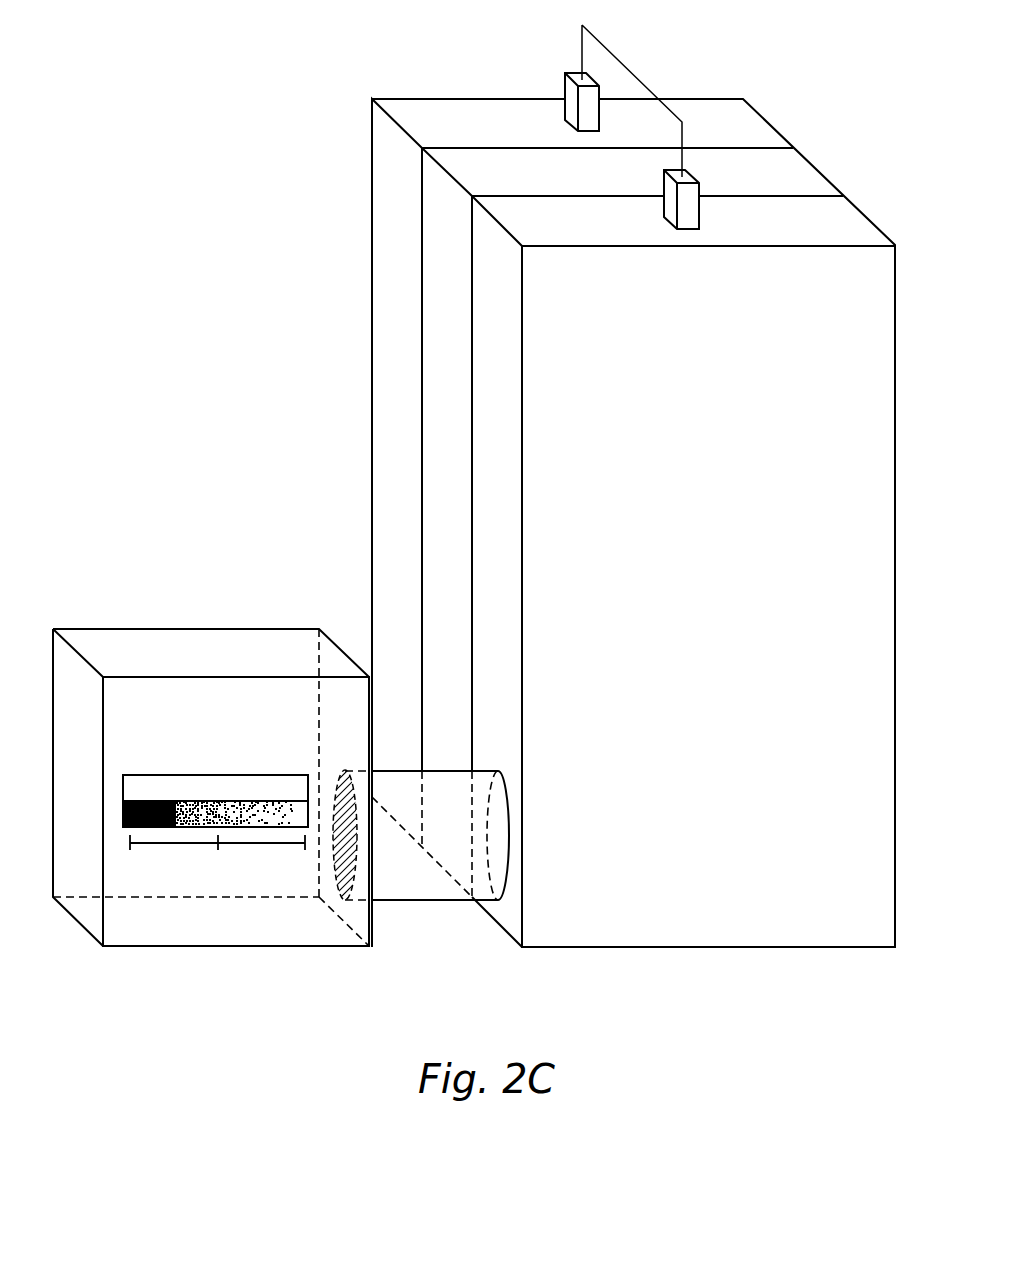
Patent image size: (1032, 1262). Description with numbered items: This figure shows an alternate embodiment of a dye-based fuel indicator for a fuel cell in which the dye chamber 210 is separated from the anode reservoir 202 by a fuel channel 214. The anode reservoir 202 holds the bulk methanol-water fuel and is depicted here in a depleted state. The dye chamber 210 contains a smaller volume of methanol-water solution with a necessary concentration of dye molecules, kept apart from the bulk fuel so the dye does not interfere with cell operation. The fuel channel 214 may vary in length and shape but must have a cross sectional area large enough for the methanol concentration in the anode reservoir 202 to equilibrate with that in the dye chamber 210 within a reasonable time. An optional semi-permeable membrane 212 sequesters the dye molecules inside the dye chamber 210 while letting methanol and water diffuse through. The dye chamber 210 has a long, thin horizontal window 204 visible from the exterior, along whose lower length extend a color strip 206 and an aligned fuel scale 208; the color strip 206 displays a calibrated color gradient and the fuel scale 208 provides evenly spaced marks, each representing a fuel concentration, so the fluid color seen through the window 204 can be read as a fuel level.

The anode reservoir 202 is at (548, 385).
The window 204 is at (179, 782).
The color strip 206 is at (122, 813).
The fuel scale 208 is at (122, 844).
The dye chamber 210 is at (206, 702).
The semi-permeable membrane 212 is at (332, 890).
The fuel channel 214 is at (427, 887).